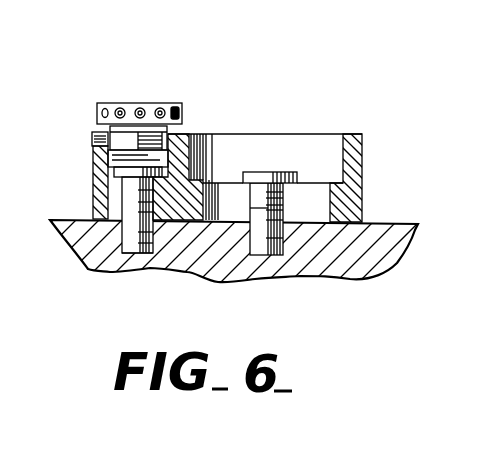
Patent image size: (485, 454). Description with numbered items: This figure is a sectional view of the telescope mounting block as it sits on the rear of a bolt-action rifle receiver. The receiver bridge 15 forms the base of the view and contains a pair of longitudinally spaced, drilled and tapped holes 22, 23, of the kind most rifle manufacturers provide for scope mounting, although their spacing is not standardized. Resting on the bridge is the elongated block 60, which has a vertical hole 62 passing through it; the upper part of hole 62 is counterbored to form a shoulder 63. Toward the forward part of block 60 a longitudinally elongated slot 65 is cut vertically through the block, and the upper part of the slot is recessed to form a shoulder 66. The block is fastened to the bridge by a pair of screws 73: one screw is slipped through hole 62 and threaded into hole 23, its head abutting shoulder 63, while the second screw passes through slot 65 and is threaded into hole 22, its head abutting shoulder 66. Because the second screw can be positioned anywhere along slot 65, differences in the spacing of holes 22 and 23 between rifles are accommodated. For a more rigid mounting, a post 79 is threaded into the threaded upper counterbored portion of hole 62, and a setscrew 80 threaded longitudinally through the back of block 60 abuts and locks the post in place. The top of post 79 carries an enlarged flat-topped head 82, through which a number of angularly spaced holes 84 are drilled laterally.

The receiver bridge 15 is at (412, 226).
The hole 22 is at (255, 249).
The hole 23 is at (138, 255).
The elongated block 60 is at (371, 133).
The hole 62 is at (124, 200).
The shoulder 63 is at (109, 166).
The slot 65 is at (335, 209).
The shoulder 66 is at (320, 183).
The screws 73 is at (263, 172).
The post 79 is at (175, 99).
The setscrew 80 is at (94, 138).
The head 82 is at (182, 105).
The holes 84 is at (163, 104).